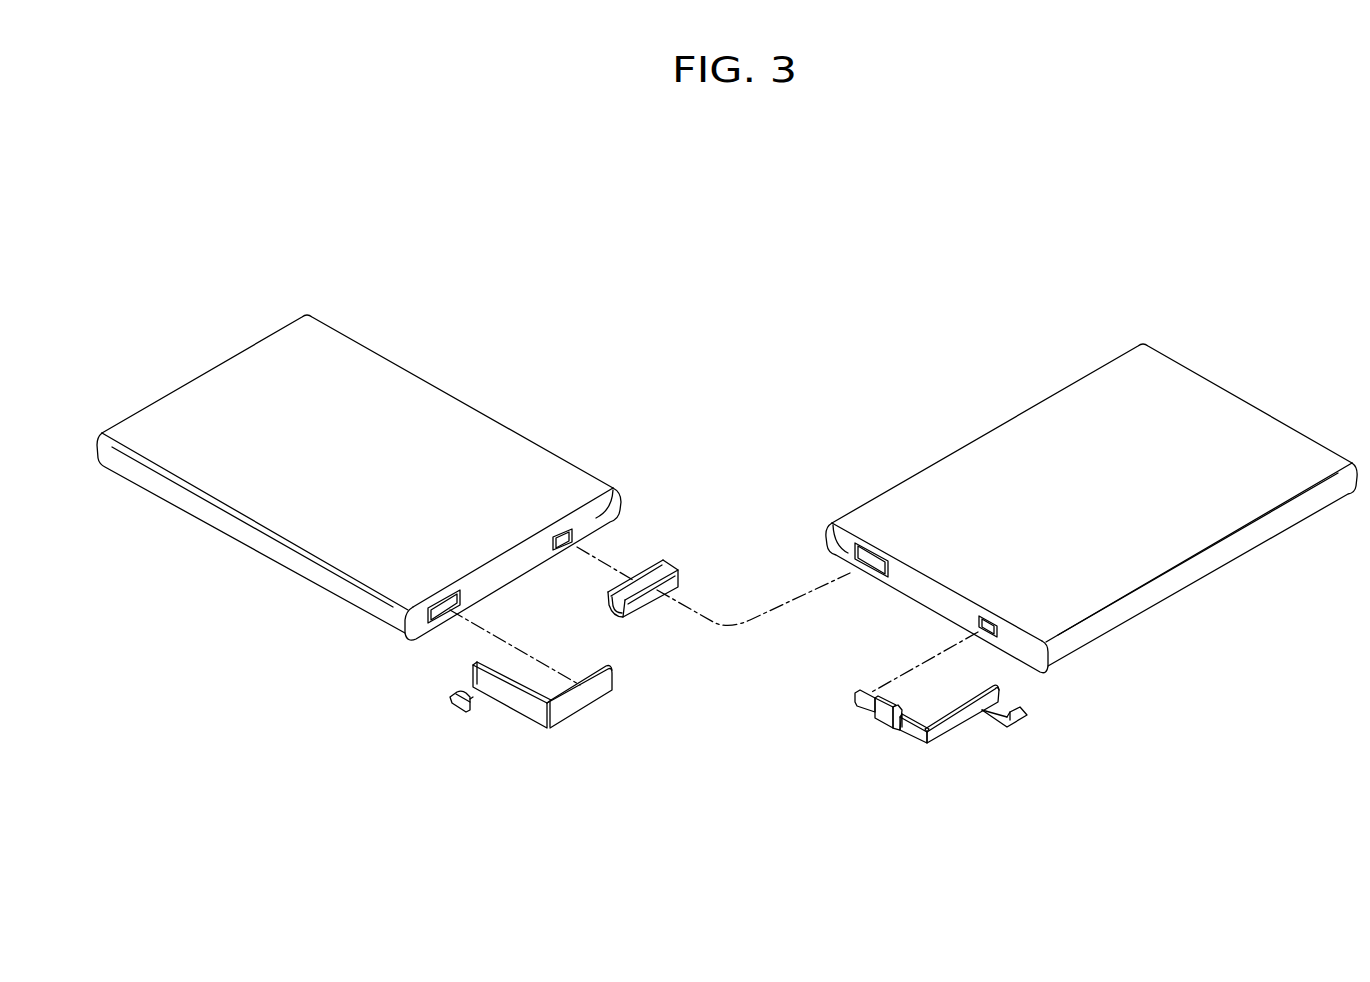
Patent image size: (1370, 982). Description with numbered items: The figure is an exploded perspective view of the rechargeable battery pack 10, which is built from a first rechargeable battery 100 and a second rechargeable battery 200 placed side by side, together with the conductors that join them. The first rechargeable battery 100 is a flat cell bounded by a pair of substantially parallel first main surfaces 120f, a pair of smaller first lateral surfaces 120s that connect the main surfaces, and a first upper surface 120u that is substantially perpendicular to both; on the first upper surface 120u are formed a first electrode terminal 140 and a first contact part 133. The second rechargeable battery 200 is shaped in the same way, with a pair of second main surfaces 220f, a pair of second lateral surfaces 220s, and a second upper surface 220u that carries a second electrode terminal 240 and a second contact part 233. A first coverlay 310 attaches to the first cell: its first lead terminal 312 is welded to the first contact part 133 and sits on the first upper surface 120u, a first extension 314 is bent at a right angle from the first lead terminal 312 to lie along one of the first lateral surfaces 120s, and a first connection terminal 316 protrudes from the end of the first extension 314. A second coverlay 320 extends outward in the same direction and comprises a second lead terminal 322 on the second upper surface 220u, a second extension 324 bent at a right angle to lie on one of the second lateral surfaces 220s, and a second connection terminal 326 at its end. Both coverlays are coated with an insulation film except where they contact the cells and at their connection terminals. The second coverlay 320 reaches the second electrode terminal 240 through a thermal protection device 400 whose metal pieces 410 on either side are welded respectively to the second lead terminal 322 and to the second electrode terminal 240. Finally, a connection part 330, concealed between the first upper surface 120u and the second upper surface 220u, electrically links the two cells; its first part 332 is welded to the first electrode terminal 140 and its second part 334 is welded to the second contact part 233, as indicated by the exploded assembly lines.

The rechargeable battery pack 10 is at (917, 254).
The first rechargeable battery 100 is at (372, 343).
The first main surfaces 120f is at (457, 430).
The first upper surface 120u is at (597, 517).
The first lateral surfaces 120s is at (168, 497).
The first electrode terminal 140 is at (570, 530).
The first contact part 133 is at (432, 617).
The second rechargeable battery 200 is at (1082, 372).
The second main surfaces 220f is at (985, 465).
The second upper surface 220u is at (932, 595).
The second lateral surfaces 220s is at (1265, 533).
The second contact part 233 is at (847, 540).
The second electrode terminal 240 is at (980, 613).
The connection part 330 is at (730, 494).
The first part 332 is at (662, 560).
The second part 334 is at (677, 570).
The first coverlay 310 is at (518, 815).
The first lead terminal 312 is at (565, 715).
The first extension 314 is at (518, 703).
The first connection terminal 316 is at (448, 698).
The second coverlay 320 is at (1085, 755).
The second lead terminal 322 is at (913, 740).
The second extension 324 is at (947, 728).
The second connection terminal 326 is at (1020, 723).
The thermal protection device 400 is at (880, 718).
The metal pieces 410 is at (858, 708).